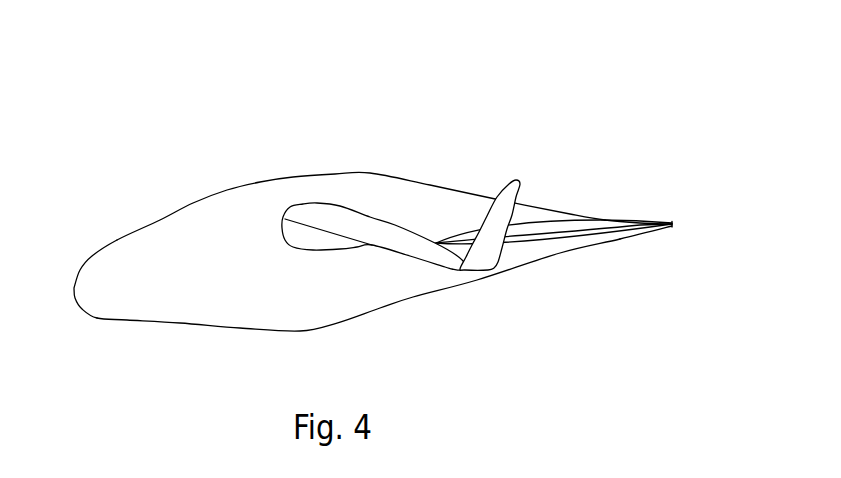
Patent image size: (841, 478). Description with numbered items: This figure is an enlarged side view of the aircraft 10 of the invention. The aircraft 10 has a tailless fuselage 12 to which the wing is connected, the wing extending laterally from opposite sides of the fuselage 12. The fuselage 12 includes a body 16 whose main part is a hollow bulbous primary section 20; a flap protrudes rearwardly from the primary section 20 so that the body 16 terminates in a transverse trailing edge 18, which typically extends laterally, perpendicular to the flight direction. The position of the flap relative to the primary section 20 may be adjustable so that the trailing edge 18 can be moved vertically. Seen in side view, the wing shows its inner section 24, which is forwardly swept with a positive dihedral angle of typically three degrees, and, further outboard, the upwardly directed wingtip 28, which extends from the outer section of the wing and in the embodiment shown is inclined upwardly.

The aircraft 10 is at (392, 192).
The tailless fuselage 12 is at (97, 204).
The body 16 is at (465, 322).
The transverse trailing edge 18 is at (674, 224).
The hollow bulbous primary section 20 is at (301, 147).
The inner section 24 is at (413, 216).
The wingtip 28 is at (499, 176).